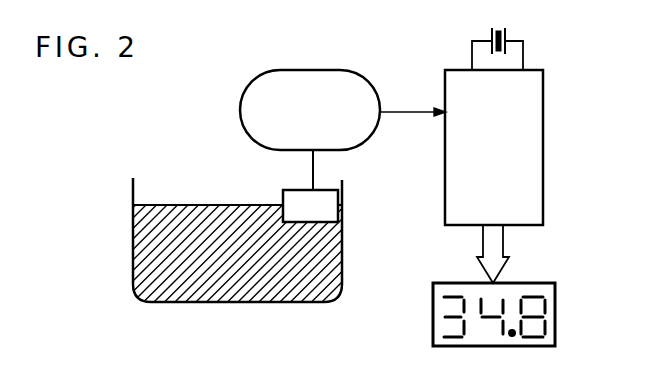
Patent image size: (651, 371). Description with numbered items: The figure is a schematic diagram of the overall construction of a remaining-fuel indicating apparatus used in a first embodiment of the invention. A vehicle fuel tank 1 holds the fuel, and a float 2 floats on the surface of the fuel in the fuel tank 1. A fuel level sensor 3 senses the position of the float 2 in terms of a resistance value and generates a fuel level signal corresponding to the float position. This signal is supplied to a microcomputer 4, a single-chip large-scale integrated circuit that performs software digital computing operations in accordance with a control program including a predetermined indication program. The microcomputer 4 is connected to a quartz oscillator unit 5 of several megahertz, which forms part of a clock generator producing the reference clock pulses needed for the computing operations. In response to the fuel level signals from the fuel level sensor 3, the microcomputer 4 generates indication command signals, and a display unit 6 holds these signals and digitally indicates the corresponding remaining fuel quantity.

The vehicle fuel tank 1 is at (342, 237).
The float 2 is at (329, 190).
The fuel level sensor 3 is at (343, 70).
The microcomputer 4 is at (543, 93).
The quartz oscillator unit 5 is at (498, 27).
The display unit 6 is at (555, 311).